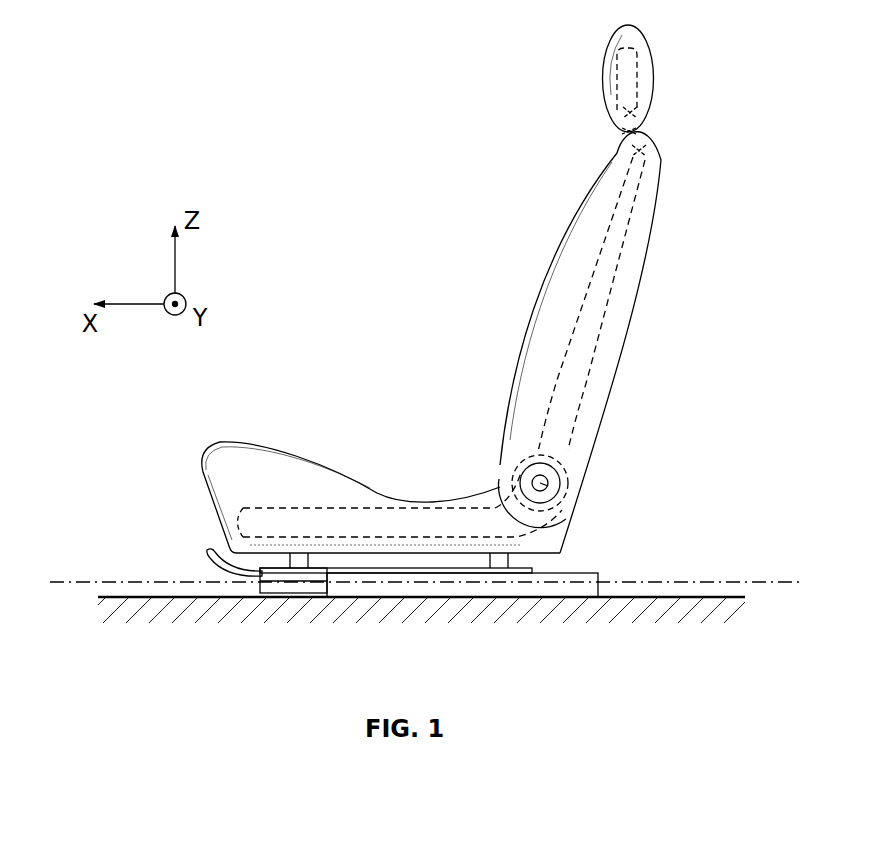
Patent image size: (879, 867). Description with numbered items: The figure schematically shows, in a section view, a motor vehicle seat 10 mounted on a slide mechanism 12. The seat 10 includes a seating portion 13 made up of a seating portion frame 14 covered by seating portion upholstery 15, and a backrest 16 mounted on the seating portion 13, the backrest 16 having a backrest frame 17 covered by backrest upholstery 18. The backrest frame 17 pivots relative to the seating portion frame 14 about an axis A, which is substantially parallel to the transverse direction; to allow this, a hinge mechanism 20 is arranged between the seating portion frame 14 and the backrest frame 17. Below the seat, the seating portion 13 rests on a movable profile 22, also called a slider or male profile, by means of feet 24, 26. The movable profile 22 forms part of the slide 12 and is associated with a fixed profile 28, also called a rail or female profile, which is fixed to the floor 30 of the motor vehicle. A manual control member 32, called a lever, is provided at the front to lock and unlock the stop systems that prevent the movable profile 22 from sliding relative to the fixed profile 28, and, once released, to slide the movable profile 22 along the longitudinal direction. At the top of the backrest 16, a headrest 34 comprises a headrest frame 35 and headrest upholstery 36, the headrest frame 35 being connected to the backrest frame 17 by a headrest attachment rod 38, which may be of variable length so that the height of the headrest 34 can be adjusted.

The vehicle seat 10 is at (318, 292).
The slide mechanism 12 is at (158, 515).
The seating portion 13 is at (183, 437).
The seating portion frame 14 is at (375, 508).
The seating portion upholstery 15 is at (218, 480).
The backrest 16 is at (458, 258).
The backrest frame 17 is at (605, 312).
The backrest upholstery 18 is at (571, 278).
The hinge mechanism 20 is at (548, 475).
The movable profile 22 is at (273, 573).
The foot 24 is at (300, 560).
The foot 26 is at (500, 560).
The fixed profile 28 is at (562, 588).
The floor 30 is at (698, 595).
The manual control member 32 is at (207, 553).
The headrest 34 is at (654, 64).
The headrest frame 35 is at (605, 57).
The headrest upholstery 36 is at (605, 100).
The headrest attachment rod 38 is at (645, 133).
The axis A is at (548, 486).